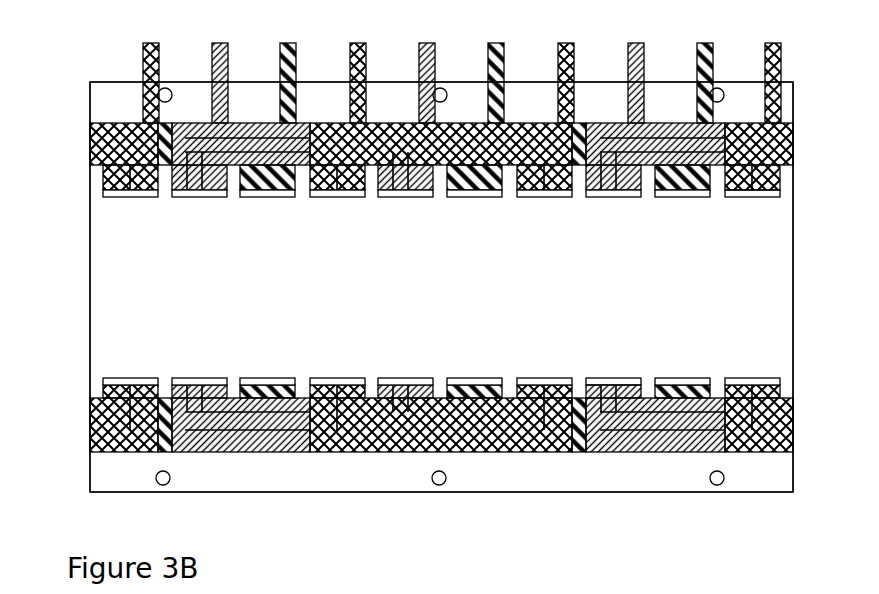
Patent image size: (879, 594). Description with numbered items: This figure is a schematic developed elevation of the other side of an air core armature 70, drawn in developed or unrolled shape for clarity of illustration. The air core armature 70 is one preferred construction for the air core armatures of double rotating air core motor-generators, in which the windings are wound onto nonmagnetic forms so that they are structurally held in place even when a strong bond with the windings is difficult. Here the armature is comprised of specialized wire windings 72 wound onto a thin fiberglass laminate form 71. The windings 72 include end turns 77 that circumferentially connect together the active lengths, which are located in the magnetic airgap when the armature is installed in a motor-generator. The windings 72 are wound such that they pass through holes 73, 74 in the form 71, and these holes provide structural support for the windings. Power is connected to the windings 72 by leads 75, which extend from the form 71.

The air core armature 70 is at (70, 64).
The fiberglass laminate form 71 is at (793, 98).
The wire windings 72 is at (778, 178).
The hole 73 is at (612, 378).
The hole 74 is at (632, 197).
The leads 75 is at (574, 56).
The end turns 77 is at (78, 117).